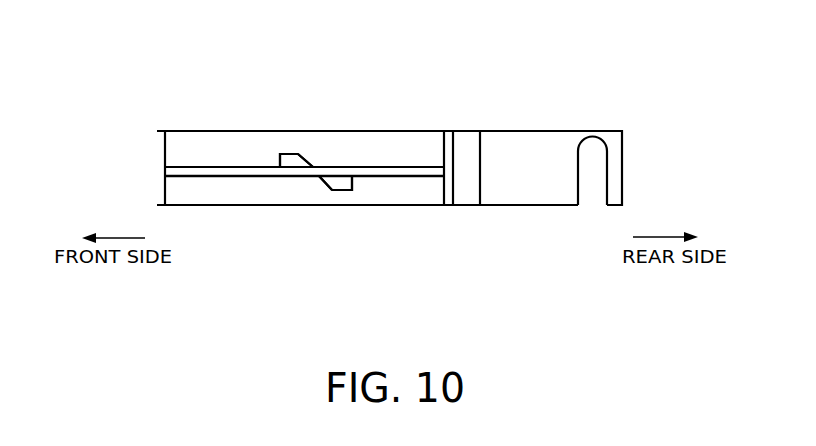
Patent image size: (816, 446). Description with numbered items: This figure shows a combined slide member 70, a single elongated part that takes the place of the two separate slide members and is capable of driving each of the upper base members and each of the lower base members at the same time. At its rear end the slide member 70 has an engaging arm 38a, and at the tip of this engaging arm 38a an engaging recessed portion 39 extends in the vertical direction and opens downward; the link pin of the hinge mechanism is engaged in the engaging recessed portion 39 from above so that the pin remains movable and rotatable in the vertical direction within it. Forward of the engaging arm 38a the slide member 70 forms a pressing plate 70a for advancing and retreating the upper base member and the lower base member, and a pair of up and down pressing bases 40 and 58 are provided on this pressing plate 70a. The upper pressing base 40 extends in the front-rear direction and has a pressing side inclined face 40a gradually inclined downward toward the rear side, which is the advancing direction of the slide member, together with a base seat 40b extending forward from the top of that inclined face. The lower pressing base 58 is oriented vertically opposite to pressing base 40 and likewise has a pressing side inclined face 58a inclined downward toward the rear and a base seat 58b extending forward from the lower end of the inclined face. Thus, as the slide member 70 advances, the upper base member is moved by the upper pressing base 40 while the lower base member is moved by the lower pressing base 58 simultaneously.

The slide member 70 is at (97, 49).
The pressing plate 70a is at (410, 199).
The engaging arm 38a is at (527, 197).
The engaging recessed portion 39 is at (578, 173).
The pressing base 40 is at (298, 160).
The pressing side inclined face 40a is at (307, 158).
The base seat 40b is at (290, 153).
The pressing base 58 is at (330, 191).
The pressing side inclined face 58a is at (318, 184).
The base seat 58b is at (343, 191).